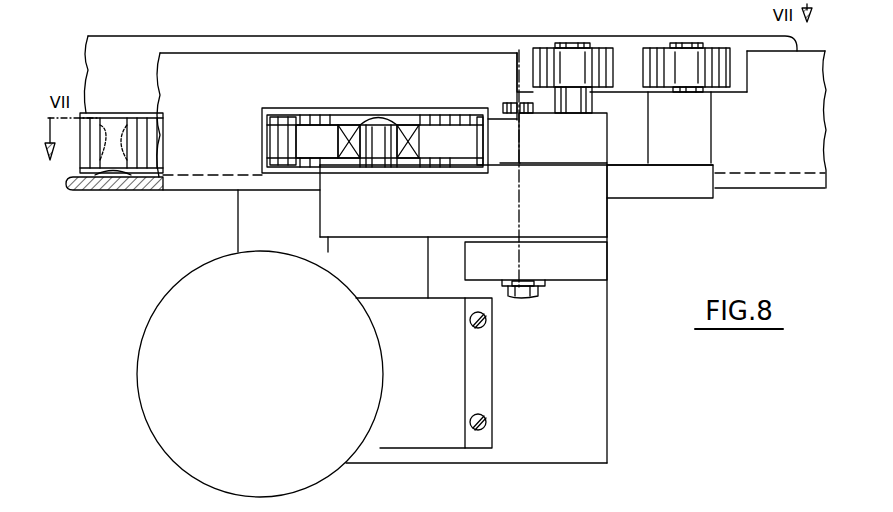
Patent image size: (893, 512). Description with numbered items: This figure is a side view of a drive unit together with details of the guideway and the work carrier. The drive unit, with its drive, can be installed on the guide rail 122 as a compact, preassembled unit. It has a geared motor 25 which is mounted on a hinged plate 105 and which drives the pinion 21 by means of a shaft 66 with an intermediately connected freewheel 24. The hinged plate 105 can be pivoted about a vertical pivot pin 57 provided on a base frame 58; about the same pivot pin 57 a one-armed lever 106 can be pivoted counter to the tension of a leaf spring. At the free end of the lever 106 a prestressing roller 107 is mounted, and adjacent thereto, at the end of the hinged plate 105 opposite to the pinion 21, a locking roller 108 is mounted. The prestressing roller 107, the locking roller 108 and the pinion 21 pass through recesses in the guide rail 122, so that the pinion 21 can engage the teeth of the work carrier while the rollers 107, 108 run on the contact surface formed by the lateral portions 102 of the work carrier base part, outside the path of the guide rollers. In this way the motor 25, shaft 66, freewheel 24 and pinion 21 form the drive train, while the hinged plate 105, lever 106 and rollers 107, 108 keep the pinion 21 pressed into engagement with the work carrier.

The lateral portions of the base part 102 is at (125, 48).
The guide rail 122 is at (207, 65).
The pinion 21 is at (297, 137).
The shaft 66 is at (378, 115).
The freewheel 24 is at (408, 133).
The prestressing roller 107 is at (562, 57).
The locking roller 108 is at (675, 57).
The one-armed lever 106 is at (595, 150).
The hinged plate 105 is at (690, 190).
The geared motor 25 is at (167, 313).
The vertical pivot pin 57 is at (522, 300).
The base frame 58 is at (598, 388).